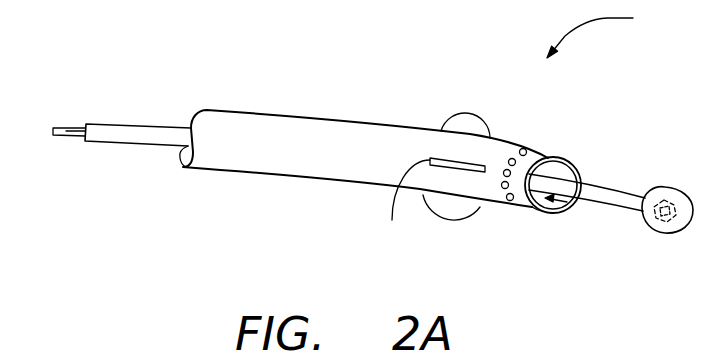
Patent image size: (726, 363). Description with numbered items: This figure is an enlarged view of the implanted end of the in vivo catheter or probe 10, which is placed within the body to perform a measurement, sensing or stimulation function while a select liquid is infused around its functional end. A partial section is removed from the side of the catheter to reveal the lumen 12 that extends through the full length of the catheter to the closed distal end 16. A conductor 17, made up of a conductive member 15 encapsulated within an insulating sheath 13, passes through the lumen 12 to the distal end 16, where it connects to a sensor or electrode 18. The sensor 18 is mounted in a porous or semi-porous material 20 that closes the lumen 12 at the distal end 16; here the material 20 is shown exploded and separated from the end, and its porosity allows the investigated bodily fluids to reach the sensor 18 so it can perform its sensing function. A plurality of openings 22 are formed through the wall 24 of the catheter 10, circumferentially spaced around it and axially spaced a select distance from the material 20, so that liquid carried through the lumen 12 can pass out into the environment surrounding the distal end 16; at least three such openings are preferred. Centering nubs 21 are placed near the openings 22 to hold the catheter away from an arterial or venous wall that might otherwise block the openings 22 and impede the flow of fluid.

The catheter or probe 10 is at (290, 118).
The lumen 12 is at (182, 168).
The insulating sheath 13 is at (84, 132).
The conductive member 15 is at (62, 138).
The distal end 16 is at (604, 34).
The conductor 17 is at (123, 143).
The sensor or electrode 18 is at (690, 203).
The porous or semi-porous material 20 is at (673, 233).
The centering nubs 21 is at (467, 117).
The openings 22 is at (523, 148).
The wall 24 is at (573, 158).